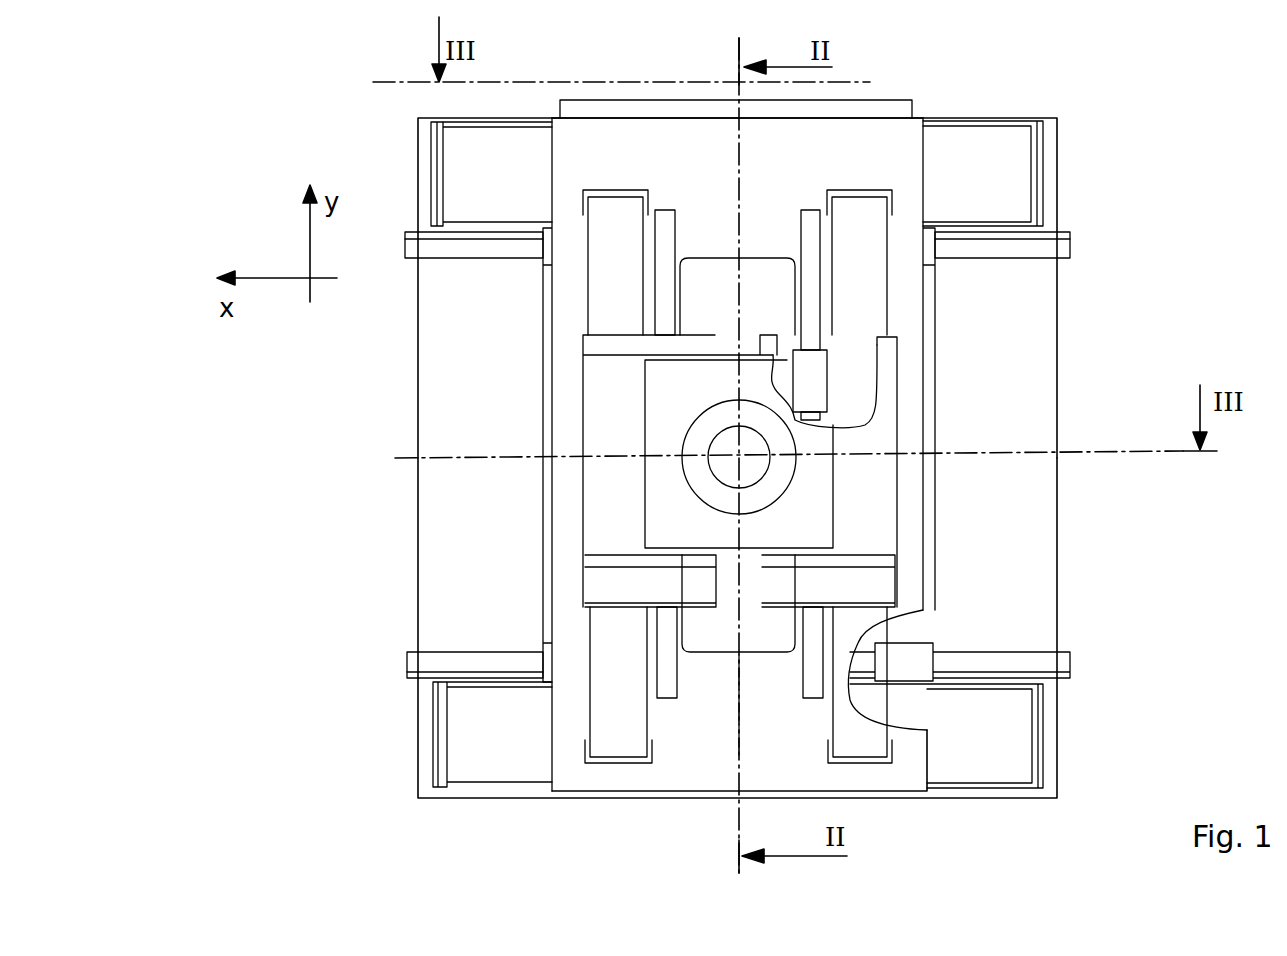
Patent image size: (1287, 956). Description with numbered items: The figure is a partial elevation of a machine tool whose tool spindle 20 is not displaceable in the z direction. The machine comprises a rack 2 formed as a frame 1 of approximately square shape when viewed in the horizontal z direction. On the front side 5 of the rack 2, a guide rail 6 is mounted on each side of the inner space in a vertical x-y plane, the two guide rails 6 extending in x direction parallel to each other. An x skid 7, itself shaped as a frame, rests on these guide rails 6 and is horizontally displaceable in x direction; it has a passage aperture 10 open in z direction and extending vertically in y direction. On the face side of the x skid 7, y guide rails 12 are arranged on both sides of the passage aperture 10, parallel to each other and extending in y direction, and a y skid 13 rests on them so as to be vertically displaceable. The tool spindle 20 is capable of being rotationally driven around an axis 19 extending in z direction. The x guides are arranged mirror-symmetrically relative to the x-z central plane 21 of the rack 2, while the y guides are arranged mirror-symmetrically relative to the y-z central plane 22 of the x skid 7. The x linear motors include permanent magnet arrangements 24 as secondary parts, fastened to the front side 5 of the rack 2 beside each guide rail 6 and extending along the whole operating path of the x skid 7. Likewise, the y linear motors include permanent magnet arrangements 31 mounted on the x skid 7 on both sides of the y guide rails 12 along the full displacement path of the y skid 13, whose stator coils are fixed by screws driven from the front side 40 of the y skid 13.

The frame 1 is at (1058, 185).
The rack 2 is at (1060, 733).
The front side 5 is at (987, 383).
The guide rail 6 is at (1022, 243).
The x skid 7 is at (783, 205).
The passage aperture 10 is at (763, 310).
The y guide rail 12 is at (666, 232).
The y skid 13 is at (636, 405).
The axis 19 is at (725, 455).
The tool spindle 20 is at (713, 490).
The x-z central plane 21 is at (1110, 501).
The y-z central plane 22 is at (737, 672).
The permanent magnet arrangement 24 is at (1003, 195).
The permanent magnet arrangement 31 is at (633, 275).
The front side 40 is at (693, 405).